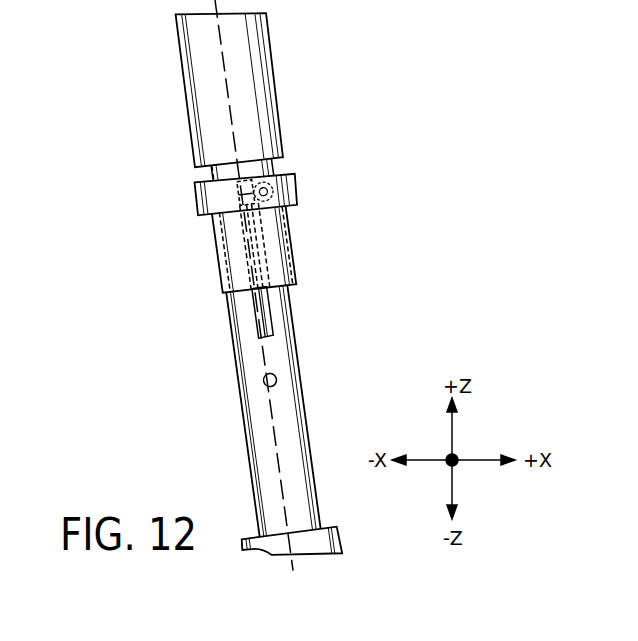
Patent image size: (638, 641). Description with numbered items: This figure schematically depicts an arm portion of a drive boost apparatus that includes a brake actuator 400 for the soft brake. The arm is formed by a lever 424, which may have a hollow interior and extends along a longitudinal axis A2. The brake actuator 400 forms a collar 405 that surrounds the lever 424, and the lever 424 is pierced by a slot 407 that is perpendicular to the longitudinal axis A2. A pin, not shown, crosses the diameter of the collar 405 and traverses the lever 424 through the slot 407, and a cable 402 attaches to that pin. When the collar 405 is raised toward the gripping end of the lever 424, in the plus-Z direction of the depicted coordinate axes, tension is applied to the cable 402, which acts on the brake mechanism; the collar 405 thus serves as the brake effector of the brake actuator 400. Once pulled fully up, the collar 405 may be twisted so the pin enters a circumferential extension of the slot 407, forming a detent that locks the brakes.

The longitudinal axis A2 is at (228, 70).
The collar 405 is at (270, 132).
The brake actuator 400 is at (196, 203).
The cable 402 is at (262, 312).
The slot 407 is at (276, 376).
The lever 424 is at (245, 403).